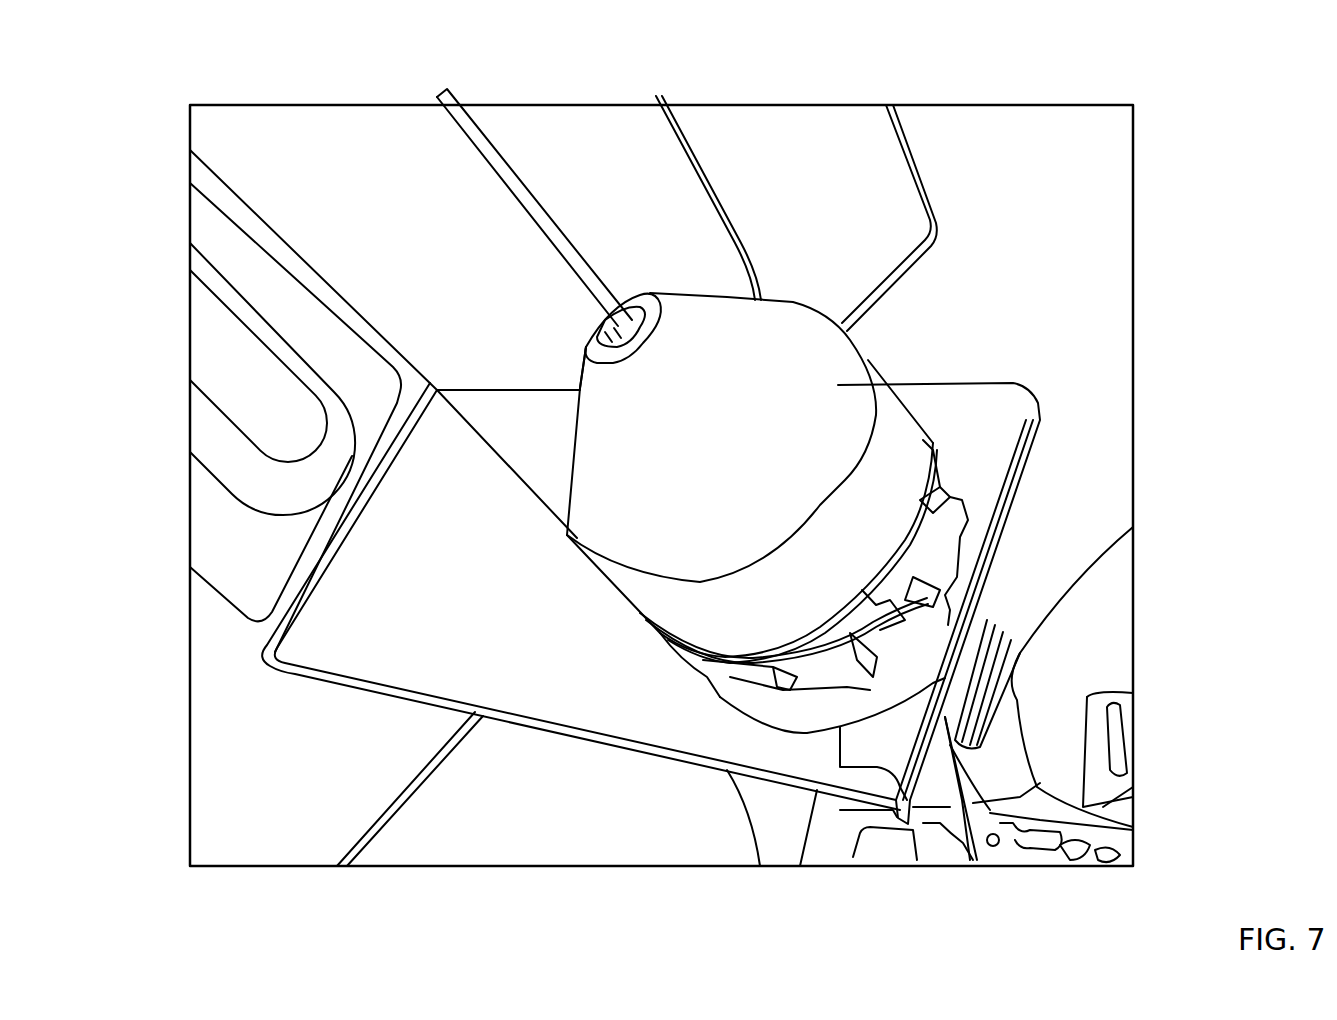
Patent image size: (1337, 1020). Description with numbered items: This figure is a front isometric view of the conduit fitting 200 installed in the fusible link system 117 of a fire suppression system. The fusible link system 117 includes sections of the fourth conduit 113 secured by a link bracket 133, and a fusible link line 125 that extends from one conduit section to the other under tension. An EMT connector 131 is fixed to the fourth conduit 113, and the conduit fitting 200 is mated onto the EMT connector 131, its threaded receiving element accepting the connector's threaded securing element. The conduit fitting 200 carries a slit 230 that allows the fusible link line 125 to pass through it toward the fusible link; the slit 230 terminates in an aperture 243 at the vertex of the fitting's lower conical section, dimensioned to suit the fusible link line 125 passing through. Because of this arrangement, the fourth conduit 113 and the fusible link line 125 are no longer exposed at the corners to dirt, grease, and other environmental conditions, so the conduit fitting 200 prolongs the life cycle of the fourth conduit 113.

The fourth conduit 113 is at (1010, 665).
The fusible link system 117 is at (478, 233).
The fusible link line 125 is at (527, 197).
The EMT connector 131 is at (830, 677).
The link bracket 133 is at (273, 394).
The conduit fitting 200 is at (766, 346).
The slit 230 is at (578, 384).
The aperture 243 is at (622, 317).